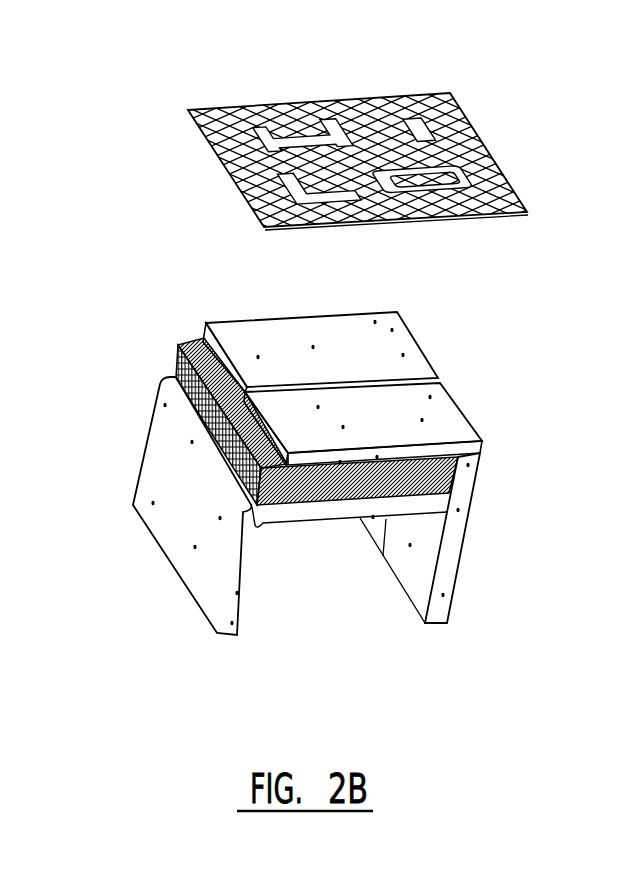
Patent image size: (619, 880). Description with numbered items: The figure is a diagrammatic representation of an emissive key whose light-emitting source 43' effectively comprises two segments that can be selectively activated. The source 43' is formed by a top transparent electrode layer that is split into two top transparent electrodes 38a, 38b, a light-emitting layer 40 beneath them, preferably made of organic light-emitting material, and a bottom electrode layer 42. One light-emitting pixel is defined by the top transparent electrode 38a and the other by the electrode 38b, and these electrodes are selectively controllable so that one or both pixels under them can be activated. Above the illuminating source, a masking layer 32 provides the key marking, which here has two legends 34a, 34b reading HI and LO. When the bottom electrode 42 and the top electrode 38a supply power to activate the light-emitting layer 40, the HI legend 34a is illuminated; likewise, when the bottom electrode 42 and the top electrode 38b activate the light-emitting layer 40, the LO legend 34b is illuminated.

The masking layer 32 is at (480, 138).
The legend 34a is at (184, 141).
The legend 34b is at (208, 196).
The top transparent electrode 38a is at (378, 352).
The top transparent electrode 38b is at (397, 413).
The light-emitting layer 40 is at (255, 530).
The bottom electrode layer 42 is at (183, 588).
The light-emitting source 43' is at (547, 276).